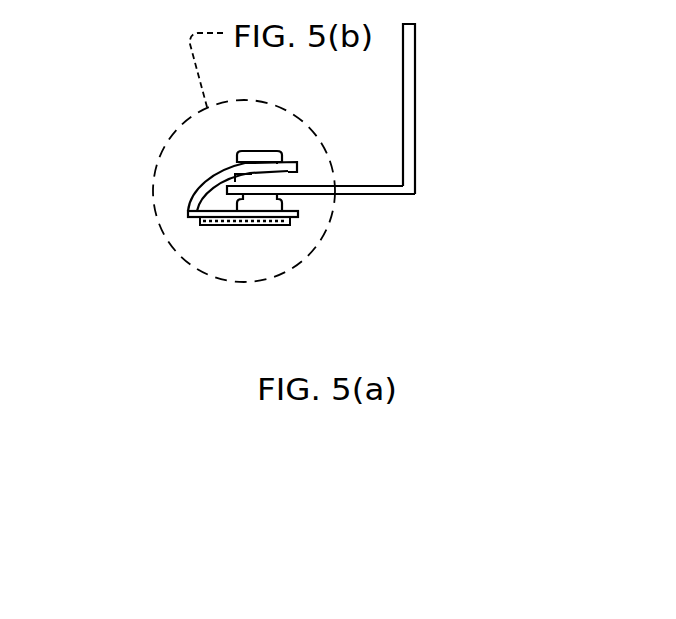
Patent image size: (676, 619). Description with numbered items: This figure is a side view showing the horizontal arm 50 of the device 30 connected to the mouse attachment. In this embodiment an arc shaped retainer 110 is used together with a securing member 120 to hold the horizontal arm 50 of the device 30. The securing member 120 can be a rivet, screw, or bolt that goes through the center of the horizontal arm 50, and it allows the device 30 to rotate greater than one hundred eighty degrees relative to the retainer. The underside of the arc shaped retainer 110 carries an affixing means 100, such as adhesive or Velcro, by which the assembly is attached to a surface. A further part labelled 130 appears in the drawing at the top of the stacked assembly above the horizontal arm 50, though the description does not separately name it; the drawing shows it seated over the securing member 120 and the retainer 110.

The device 30 is at (415, 80).
The horizontal arm 50 is at (365, 194).
The affixing means 100 is at (207, 227).
The arc shaped retainer 110 is at (206, 182).
The securing member 120 is at (232, 187).
The nut 130 is at (269, 151).